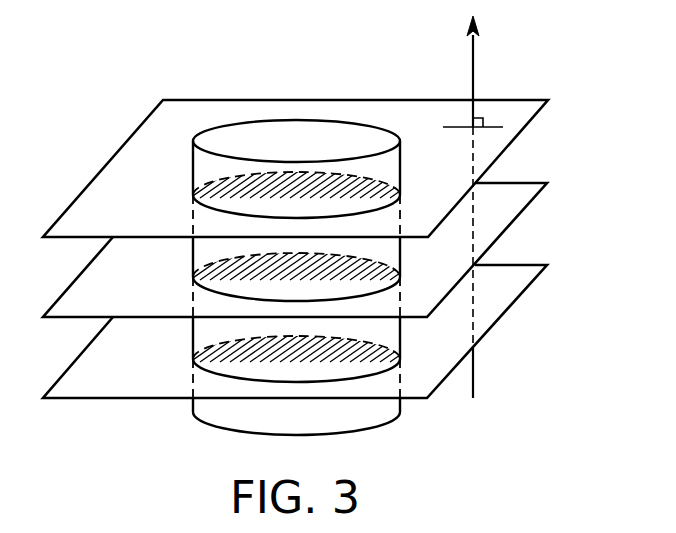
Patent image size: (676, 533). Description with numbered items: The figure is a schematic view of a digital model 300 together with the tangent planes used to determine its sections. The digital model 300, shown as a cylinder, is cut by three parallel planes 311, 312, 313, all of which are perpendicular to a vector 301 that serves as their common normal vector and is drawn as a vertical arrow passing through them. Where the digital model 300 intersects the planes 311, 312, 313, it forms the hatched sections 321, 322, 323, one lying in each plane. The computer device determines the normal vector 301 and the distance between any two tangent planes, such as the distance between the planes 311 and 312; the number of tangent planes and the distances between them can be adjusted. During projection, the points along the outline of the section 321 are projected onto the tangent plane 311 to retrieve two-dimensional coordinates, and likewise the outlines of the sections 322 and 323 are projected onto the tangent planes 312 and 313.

The digital model 300 is at (293, 141).
The vector 301 is at (473, 58).
The tangent plane 311 is at (520, 113).
The tangent plane 312 is at (517, 195).
The tangent plane 313 is at (517, 277).
The section 321 is at (200, 195).
The section 322 is at (200, 277).
The section 323 is at (200, 359).